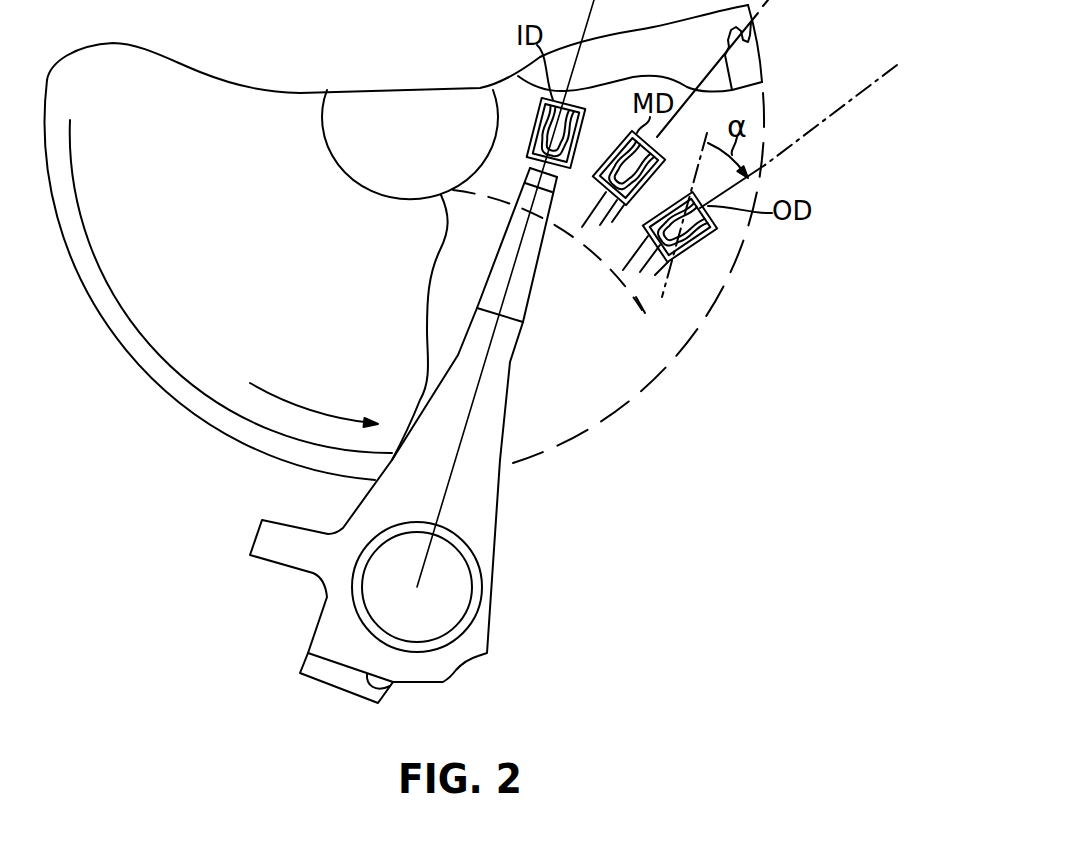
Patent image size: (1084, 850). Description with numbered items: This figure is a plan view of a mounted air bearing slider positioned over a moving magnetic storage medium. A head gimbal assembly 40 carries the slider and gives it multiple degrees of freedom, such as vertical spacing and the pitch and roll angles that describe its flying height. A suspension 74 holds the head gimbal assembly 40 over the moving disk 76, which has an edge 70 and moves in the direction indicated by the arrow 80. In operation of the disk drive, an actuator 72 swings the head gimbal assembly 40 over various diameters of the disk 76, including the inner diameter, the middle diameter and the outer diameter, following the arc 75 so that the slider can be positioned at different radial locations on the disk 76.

The head gimbal assembly 40 is at (573, 103).
The edge 70 is at (150, 373).
The actuator 72 is at (492, 596).
The suspension 74 is at (529, 295).
The arc 75 is at (641, 311).
The disk 76 is at (243, 266).
The arrow 80 is at (315, 408).